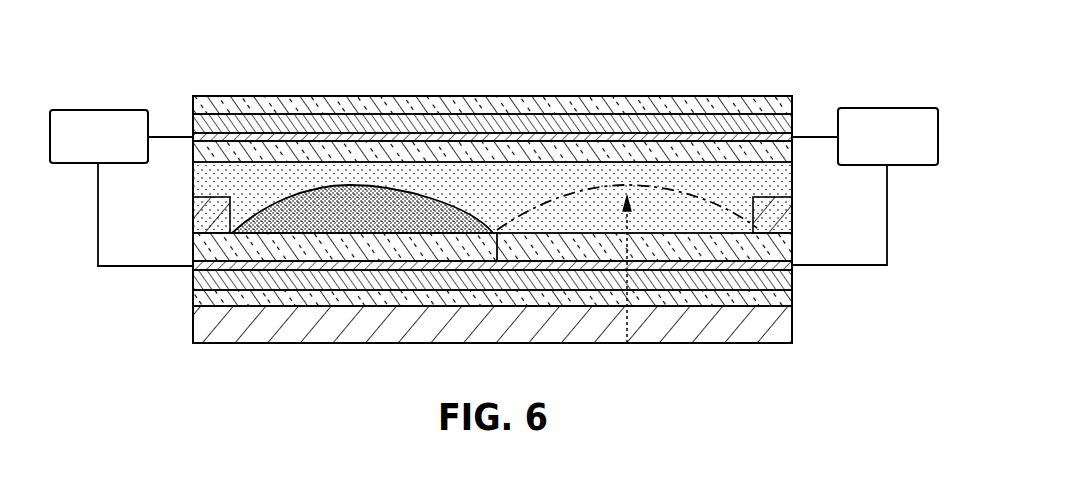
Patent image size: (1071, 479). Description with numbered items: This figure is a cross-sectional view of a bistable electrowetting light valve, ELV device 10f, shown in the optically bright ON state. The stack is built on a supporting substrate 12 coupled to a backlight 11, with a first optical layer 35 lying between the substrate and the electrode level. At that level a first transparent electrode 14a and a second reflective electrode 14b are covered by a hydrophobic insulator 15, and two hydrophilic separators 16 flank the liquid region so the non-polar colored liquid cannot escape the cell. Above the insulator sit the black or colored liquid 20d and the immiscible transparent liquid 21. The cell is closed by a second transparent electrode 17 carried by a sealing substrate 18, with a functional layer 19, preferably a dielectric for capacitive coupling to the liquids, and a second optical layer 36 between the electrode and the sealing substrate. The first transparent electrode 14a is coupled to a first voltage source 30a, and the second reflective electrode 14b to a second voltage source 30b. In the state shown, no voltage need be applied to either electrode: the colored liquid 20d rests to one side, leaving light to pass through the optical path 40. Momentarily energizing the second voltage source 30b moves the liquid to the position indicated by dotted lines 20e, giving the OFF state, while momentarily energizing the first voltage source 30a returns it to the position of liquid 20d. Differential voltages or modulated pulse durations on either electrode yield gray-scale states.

The ELV device 10f is at (776, 64).
The backlight 11 is at (792, 332).
The supporting substrate 12 is at (193, 297).
The first transparent electrode 14a is at (792, 254).
The second reflective electrode 14b is at (193, 248).
The hydrophobic insulator 15 is at (775, 243).
The hydrophilic separator 16 is at (193, 219).
The second transparent electrode 17 is at (193, 125).
The sealing substrate 18 is at (193, 108).
The functional layer 19 is at (193, 150).
The liquid 20d is at (263, 197).
The dotted lines 20e is at (565, 190).
The transparent liquid 21 is at (792, 181).
The first voltage source 30a is at (887, 108).
The second voltage source 30b is at (100, 110).
The first optical layer 35 is at (792, 278).
The second optical layer 36 is at (795, 121).
The optical path 40 is at (630, 215).